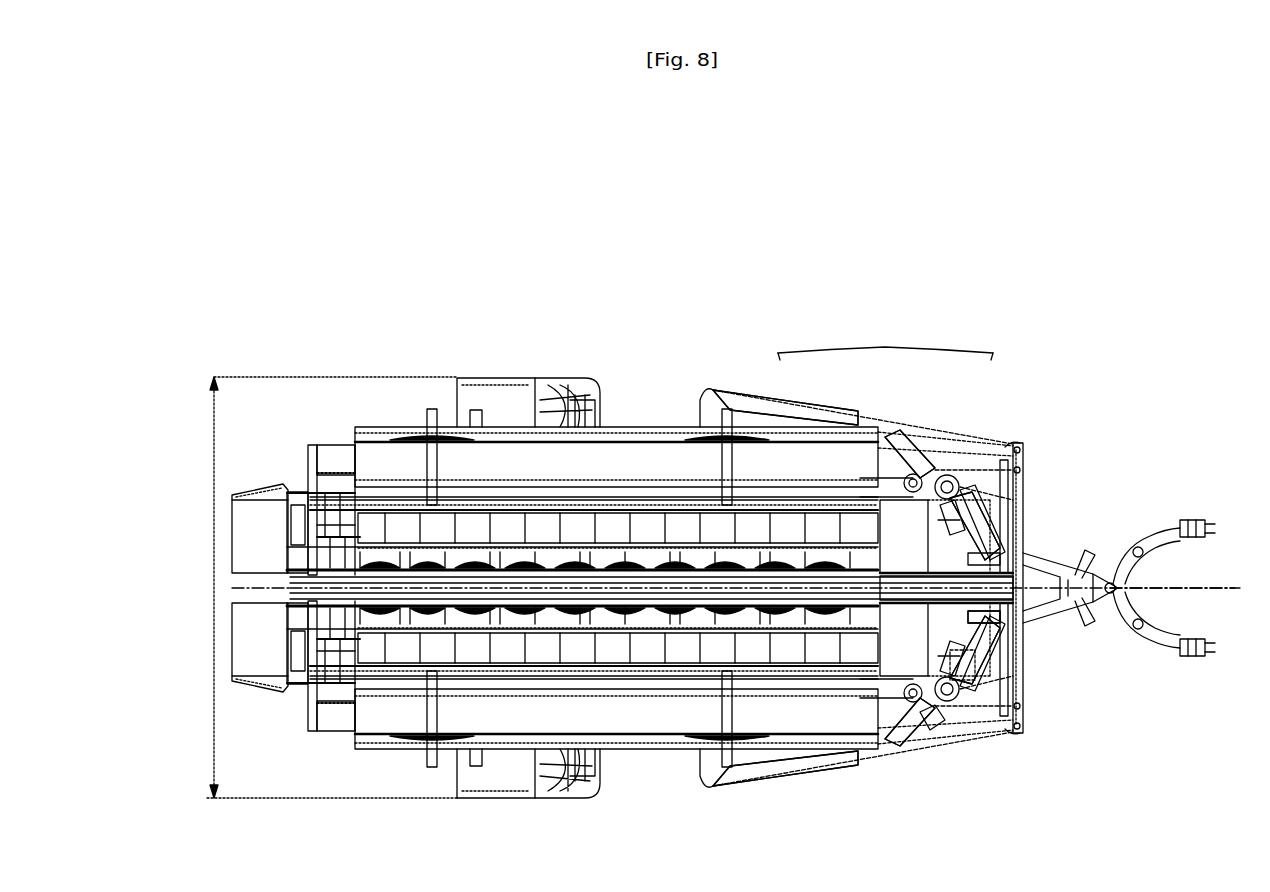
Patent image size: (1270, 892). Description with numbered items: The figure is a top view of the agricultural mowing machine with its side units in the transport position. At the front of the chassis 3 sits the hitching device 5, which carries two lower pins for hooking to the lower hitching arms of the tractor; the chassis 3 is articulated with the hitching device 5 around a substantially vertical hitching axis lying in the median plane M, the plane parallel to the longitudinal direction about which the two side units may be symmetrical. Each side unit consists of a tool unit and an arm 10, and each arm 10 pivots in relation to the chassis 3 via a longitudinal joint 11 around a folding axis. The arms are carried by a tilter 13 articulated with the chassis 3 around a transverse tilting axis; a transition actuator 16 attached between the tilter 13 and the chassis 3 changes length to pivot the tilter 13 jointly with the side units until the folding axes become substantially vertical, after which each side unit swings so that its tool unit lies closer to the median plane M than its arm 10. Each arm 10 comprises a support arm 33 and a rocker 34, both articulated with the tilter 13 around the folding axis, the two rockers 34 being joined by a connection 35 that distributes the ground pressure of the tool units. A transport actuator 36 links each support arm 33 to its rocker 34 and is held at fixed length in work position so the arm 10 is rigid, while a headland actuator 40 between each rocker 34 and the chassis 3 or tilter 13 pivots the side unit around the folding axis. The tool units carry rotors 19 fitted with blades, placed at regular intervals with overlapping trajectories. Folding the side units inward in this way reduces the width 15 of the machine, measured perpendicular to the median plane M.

The chassis 3 is at (1040, 558).
The hitching device 5 is at (1150, 526).
The arm 10 is at (885, 341).
The longitudinal joint 11 is at (929, 718).
The tilter 13 is at (963, 663).
The width 15 is at (213, 490).
The transition actuator 16 is at (817, 594).
The rotors 19 is at (465, 612).
The support arm 33 is at (907, 453).
The rocker 34 is at (990, 467).
The connection 35 is at (1013, 530).
The transport actuator 36 is at (767, 407).
The headland actuator 40 is at (998, 650).
The median plane M is at (1177, 588).